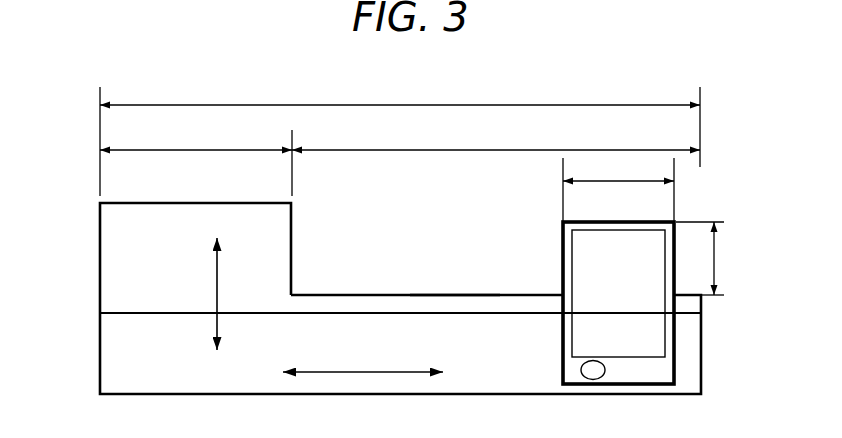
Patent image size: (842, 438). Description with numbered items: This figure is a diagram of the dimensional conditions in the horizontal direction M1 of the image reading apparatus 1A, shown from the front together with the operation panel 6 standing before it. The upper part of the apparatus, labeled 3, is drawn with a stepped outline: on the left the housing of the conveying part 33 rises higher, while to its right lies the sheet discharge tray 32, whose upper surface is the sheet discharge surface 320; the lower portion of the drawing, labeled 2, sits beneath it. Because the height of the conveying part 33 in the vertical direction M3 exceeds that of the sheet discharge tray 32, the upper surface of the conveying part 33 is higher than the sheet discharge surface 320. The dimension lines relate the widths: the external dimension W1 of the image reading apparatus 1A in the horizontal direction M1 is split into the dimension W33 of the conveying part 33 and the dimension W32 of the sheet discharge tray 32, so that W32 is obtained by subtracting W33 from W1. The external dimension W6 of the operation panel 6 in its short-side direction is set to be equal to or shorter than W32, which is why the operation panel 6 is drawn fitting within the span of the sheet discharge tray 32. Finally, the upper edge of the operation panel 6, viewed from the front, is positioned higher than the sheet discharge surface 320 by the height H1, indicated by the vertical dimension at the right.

The image reading apparatus 1A is at (490, 67).
The base portion 2 is at (90, 316).
The upper portion 3 is at (90, 205).
The sheet discharge tray 32 is at (398, 301).
The conveying part 33 is at (190, 207).
The sheet discharge surface 320 is at (445, 294).
The operation panel 6 is at (563, 250).
The external dimension of the image reading apparatus W1 is at (400, 138).
The dimension of the sheet discharge tray W32 is at (496, 138).
The dimension of the conveying part W33 is at (196, 161).
The external dimension of the operation panel W6 is at (618, 189).
The height H1 is at (711, 258).
The vertical direction M3 is at (233, 294).
The horizontal direction M1 is at (363, 360).